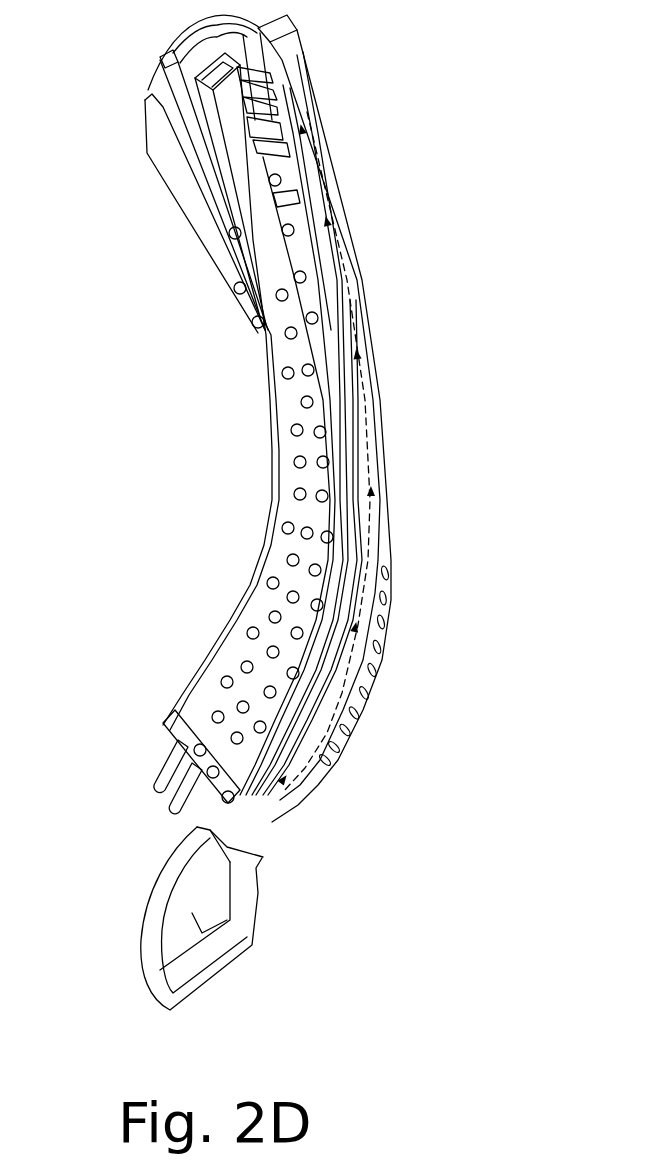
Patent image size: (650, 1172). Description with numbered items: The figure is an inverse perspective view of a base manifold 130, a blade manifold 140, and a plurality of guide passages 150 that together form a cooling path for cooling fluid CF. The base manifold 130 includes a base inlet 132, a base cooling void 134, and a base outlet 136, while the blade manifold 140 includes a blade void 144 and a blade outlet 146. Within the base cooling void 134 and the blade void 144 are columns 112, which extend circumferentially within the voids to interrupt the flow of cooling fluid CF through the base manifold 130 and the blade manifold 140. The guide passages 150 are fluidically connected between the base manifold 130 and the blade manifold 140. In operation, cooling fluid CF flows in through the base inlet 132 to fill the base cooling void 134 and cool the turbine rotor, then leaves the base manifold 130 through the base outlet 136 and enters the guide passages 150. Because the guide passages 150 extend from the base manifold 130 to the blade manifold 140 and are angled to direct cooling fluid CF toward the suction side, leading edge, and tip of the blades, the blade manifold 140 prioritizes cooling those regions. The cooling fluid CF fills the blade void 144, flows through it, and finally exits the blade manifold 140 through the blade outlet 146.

The columns 112 is at (247, 667).
The base manifold 130 is at (357, 272).
The base inlet 132 is at (182, 857).
The base cooling void 134 is at (367, 462).
The base outlet 136 is at (262, 145).
The blade manifold 140 is at (285, 530).
The blade void 144 is at (287, 355).
The blade outlet 146 is at (190, 787).
The guide passages 150 is at (232, 97).
The cooling fluid CF is at (333, 240).